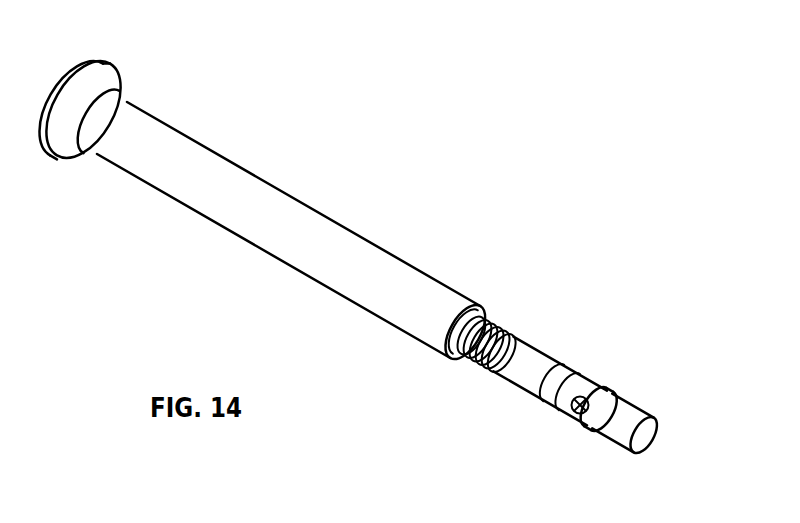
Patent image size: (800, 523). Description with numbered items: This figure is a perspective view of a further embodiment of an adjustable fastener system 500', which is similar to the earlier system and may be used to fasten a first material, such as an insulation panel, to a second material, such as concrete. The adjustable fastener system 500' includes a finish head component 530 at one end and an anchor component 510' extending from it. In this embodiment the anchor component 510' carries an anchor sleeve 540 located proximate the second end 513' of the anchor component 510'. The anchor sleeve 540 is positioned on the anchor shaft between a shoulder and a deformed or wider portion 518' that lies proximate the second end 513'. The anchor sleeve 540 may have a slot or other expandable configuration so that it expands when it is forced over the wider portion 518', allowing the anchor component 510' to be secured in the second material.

The adjustable fastener system 500' is at (398, 212).
The finish head component 530 is at (198, 267).
The anchor component 510' is at (529, 400).
The anchor sleeve 540 is at (576, 424).
The deformed or wider portion 518' is at (603, 455).
The second end 513' is at (665, 447).